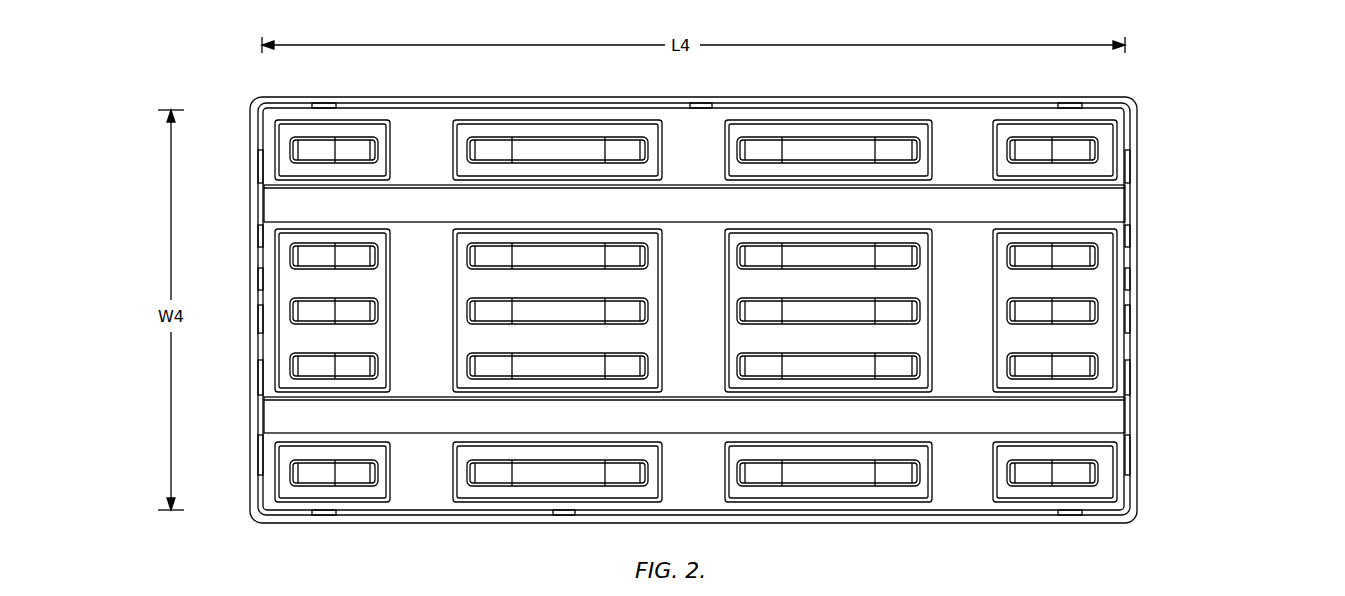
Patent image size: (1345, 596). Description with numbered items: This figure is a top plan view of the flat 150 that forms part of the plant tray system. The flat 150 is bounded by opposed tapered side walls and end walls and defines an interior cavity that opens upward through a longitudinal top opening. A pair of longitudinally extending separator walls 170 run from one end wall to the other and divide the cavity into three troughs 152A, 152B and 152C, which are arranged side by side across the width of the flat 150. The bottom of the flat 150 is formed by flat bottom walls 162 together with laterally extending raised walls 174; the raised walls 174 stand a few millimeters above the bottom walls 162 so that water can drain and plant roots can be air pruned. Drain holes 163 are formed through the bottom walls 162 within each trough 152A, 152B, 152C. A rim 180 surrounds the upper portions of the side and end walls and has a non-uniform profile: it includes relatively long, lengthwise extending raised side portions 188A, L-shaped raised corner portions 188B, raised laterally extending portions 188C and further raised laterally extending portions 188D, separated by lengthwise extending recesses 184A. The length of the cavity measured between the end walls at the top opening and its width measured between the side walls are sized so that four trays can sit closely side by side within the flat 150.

The flat 150 is at (1256, 95).
The trough 152A is at (1108, 138).
The trough 152B is at (1088, 285).
The trough 152C is at (1065, 471).
The bottom wall 162 is at (855, 130).
The drain hole 163 is at (787, 150).
The separator wall 170 is at (552, 200).
The raised wall 174 is at (425, 135).
The rim 180 is at (975, 589).
The lengthwise extending recess 184A is at (322, 103).
The raised side portion 188A is at (703, 103).
The raised corner portion 188B is at (257, 150).
The raised laterally extending portion 188C is at (258, 242).
The raised laterally extending portion 188D is at (258, 287).